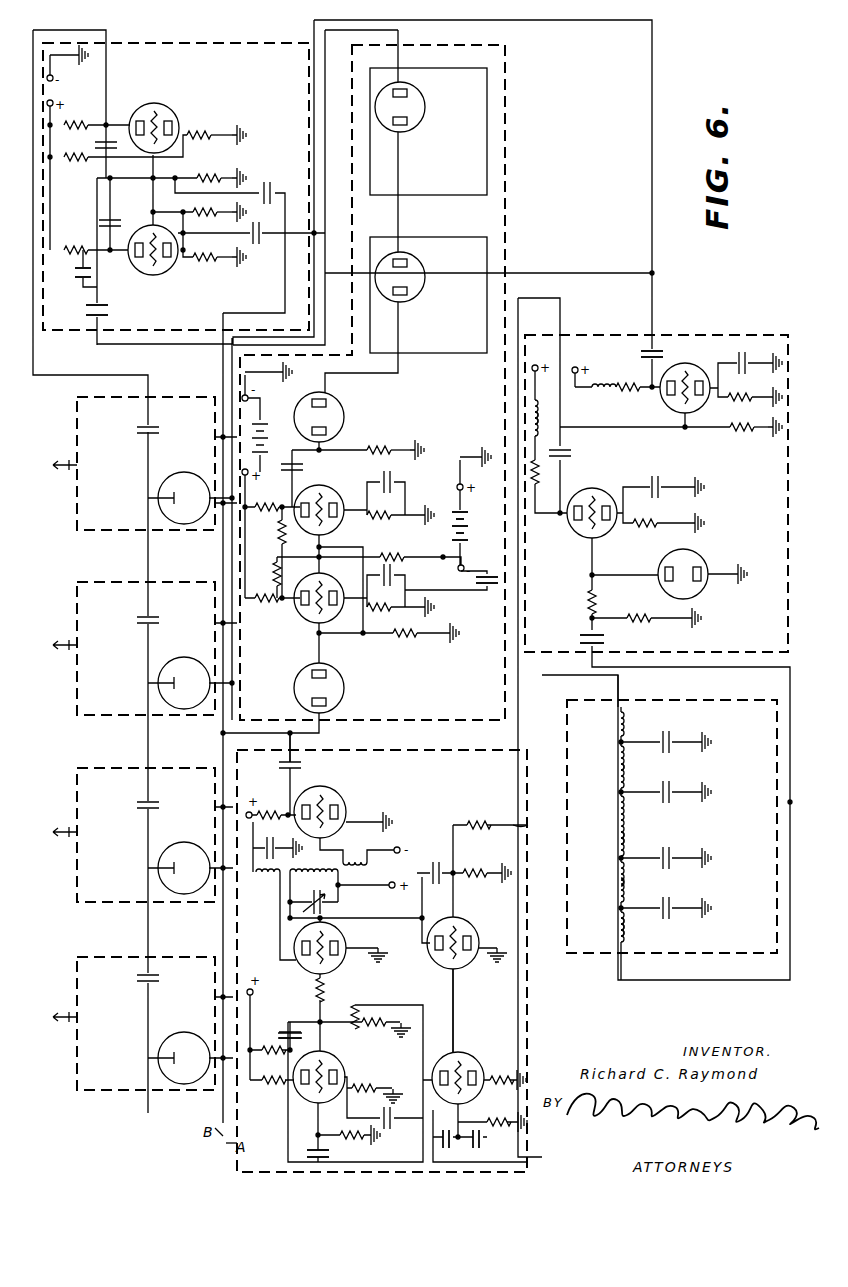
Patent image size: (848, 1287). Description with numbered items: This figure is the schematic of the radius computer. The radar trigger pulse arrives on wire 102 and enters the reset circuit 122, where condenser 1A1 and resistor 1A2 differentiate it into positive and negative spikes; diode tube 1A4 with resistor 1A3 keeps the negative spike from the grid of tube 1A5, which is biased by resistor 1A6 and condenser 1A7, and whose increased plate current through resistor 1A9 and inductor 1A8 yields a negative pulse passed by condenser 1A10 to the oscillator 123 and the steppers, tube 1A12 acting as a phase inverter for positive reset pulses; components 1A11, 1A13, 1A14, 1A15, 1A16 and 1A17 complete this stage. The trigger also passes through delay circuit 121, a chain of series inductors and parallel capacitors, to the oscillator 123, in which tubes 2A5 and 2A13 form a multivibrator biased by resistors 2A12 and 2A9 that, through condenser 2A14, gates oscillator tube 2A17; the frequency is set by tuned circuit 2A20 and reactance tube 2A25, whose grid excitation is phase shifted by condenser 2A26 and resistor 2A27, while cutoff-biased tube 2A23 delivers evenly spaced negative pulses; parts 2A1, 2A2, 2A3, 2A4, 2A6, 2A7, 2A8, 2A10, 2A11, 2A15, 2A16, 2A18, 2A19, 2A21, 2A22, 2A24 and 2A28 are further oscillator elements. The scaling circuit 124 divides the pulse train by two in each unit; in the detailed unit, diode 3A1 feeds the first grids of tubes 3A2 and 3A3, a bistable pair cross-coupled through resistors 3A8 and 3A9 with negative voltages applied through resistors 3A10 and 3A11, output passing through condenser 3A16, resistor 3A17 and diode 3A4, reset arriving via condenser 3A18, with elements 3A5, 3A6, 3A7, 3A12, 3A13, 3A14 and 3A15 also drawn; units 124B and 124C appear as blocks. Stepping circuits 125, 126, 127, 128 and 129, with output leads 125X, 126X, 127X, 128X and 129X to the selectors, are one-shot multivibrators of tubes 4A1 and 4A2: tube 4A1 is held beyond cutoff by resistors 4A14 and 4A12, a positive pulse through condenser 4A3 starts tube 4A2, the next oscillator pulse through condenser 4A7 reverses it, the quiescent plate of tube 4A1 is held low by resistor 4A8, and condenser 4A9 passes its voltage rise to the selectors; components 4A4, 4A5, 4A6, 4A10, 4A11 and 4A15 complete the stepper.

The wire 102 is at (790, 802).
The delay circuit 121 is at (773, 745).
The reset circuit 122 is at (783, 335).
The oscillator 123 is at (528, 913).
The scaler 124 is at (517, 43).
The scaler unit 124B is at (460, 250).
The scaler unit 124C is at (372, 107).
The stepping circuit 125 is at (136, 50).
The output lead 125X is at (88, 261).
The stepping circuit 126 is at (185, 397).
The output lead 126X is at (70, 462).
The stepping circuit 127 is at (102, 585).
The output lead 127X is at (70, 645).
The stepping circuit 128 is at (102, 770).
The output lead 128X is at (70, 832).
The stepping circuit 129 is at (102, 959).
The output lead 129X is at (70, 1017).
The condenser 1A1 is at (566, 625).
The resistor 1A2 is at (648, 625).
The resistor 1A3 is at (575, 578).
The diode vacuum tube 1A4 is at (705, 593).
The tube 1A5 is at (573, 525).
The resistor 1A6 is at (660, 525).
The condenser 1A7 is at (628, 440).
The inductor 1A8 is at (546, 408).
The resistor 1A9 is at (538, 490).
The condenser 1A10 is at (586, 440).
The resistor 1A11 is at (740, 440).
The tube 1A12 is at (667, 408).
The inductor 1A13 is at (600, 360).
The resistor 1A14 is at (628, 375).
The capacitor 1A15 is at (655, 340).
The capacitor 1A16 is at (743, 355).
The resistor 1A17 is at (730, 355).
The capacitor 2A1 is at (435, 1132).
The capacitor 2A2 is at (475, 1137).
The resistor 2A3 is at (493, 1083).
The resistor 2A4 is at (485, 1090).
The tube 2A5 is at (443, 1058).
The capacitor 2A6 is at (388, 1123).
The capacitor 2A7 is at (296, 1125).
The resistor 2A8 is at (300, 1125).
The resistor 2A9 is at (350, 1085).
The resistor 2A10 is at (370, 1028).
The triode tube 2A11 is at (265, 1082).
The resistor 2A12 is at (269, 1029).
The tube 2A13 is at (347, 1077).
The condenser 2A14 is at (284, 1030).
The resistor 2A15 is at (365, 1000).
The resistor 2A16 is at (316, 988).
The oscillator tube 2A17 is at (333, 960).
The inductor 2A18 is at (258, 870).
The capacitor 2A19 is at (250, 837).
The tuned circuit 2A20 is at (290, 885).
The inductor 2A21 is at (355, 850).
The resistor 2A22 is at (264, 776).
The tube 2A23 is at (323, 790).
The capacitor 2A24 is at (284, 770).
The reactance tube 2A25 is at (455, 970).
The condenser 2A26 is at (457, 815).
The resistor 2A27 is at (482, 945).
The output lead 2A28 is at (500, 825).
The diode tube 3A1 is at (340, 704).
The tube 3A2 is at (330, 625).
The tube 3A3 is at (336, 490).
The diode 3A4 is at (298, 395).
The resistor 3A5 is at (392, 640).
The resistor 3A6 is at (260, 605).
The resistor 3A7 is at (262, 510).
The resistor 3A8 is at (280, 605).
The resistor 3A9 is at (279, 540).
The resistor 3A10 is at (410, 570).
The resistor 3A11 is at (473, 590).
The resistor 3A12 is at (410, 640).
The capacitor 3A13 is at (395, 590).
The resistor 3A14 is at (370, 488).
The capacitor 3A15 is at (392, 490).
The condenser 3A16 is at (282, 472).
The resistor 3A17 is at (372, 450).
The condenser 3A18 is at (469, 537).
The tube 4A1 is at (166, 275).
The tube 4A2 is at (178, 110).
The condenser 4A3 is at (120, 300).
The resistor 4A4 is at (205, 260).
The resistor 4A5 is at (219, 230).
The capacitor 4A6 is at (266, 261).
The condenser 4A7 is at (272, 181).
The resistor 4A8 is at (119, 184).
The condenser 4A9 is at (74, 278).
The capacitor 4A10 is at (96, 190).
The resistor 4A11 is at (228, 160).
The resistor 4A12 is at (215, 127).
The resistor 4A14 is at (100, 150).
The resistor 4A15 is at (97, 98).